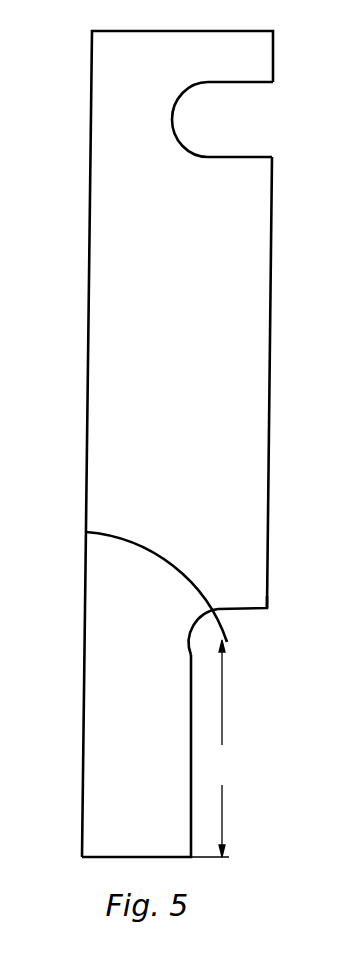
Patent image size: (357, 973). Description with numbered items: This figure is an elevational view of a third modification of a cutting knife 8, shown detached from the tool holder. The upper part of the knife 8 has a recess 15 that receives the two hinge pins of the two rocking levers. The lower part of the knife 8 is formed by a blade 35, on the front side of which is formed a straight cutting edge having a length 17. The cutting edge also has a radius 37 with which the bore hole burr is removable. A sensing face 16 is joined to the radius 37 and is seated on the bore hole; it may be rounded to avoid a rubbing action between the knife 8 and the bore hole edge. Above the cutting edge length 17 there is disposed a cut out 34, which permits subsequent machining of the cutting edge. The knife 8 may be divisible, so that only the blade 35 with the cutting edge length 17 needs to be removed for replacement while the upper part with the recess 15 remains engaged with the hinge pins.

The cutting knife 8 is at (122, 372).
The recess 15 is at (217, 120).
The sensing face 16 is at (243, 606).
The cutting edge length 17 is at (212, 748).
The cut out 34 is at (150, 552).
The blade 35 is at (128, 764).
The radius 37 is at (208, 628).